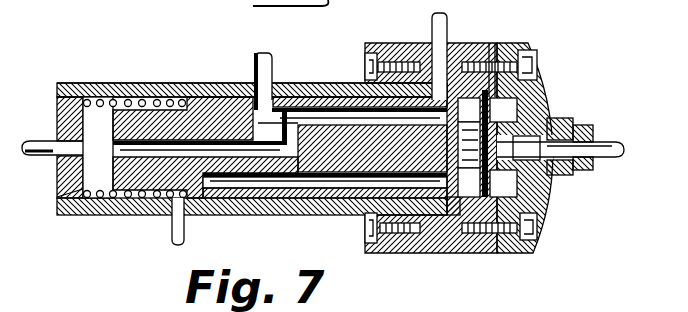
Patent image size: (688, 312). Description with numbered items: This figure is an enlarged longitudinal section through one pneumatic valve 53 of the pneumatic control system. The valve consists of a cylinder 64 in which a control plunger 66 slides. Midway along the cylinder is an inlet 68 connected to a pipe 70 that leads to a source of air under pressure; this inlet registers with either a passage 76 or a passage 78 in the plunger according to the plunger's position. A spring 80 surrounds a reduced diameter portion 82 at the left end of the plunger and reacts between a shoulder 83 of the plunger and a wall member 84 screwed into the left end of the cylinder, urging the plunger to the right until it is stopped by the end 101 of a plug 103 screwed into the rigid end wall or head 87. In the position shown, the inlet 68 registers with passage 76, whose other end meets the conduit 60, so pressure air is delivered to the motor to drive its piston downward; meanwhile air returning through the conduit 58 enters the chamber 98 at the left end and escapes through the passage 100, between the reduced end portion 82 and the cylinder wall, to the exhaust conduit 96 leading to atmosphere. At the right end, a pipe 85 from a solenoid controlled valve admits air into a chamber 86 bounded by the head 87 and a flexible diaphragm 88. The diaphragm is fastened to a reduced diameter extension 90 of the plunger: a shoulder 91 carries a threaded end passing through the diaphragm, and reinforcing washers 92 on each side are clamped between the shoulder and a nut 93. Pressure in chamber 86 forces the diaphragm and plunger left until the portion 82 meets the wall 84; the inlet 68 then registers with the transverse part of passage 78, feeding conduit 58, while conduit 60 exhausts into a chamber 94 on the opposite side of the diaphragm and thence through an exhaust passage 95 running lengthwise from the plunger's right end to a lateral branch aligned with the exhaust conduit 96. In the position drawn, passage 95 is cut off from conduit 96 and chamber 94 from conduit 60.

The pneumatic valve 53 is at (200, 82).
The conduit 58 is at (50, 154).
The conduit 60 is at (447, 26).
The cylinder 64 is at (272, 207).
The control plunger 66 is at (325, 130).
The inlet 68 is at (256, 60).
The pipe 70 is at (274, 62).
The passage 76 is at (347, 110).
The passage 78 is at (167, 147).
The spring 80 is at (98, 99).
The reduced diameter portion 82 is at (120, 112).
The shoulder 83 is at (182, 99).
The wall member 84 is at (58, 107).
The pipe 85 is at (607, 142).
The chamber 86 is at (517, 123).
The end wall or head 87 is at (547, 207).
The flexible diaphragm 88 is at (497, 117).
The reduced diameter extension 90 is at (469, 183).
The shoulder 91 is at (469, 110).
The reinforcing washers 92 is at (503, 110).
The nut 93 is at (503, 184).
The chamber 94 is at (462, 197).
The exhaust passage 95 is at (323, 180).
The exhaust conduit 96 is at (186, 231).
The chamber 98 is at (63, 186).
The passage 100 is at (158, 197).
The end 101 is at (560, 182).
The plug 103 is at (567, 125).